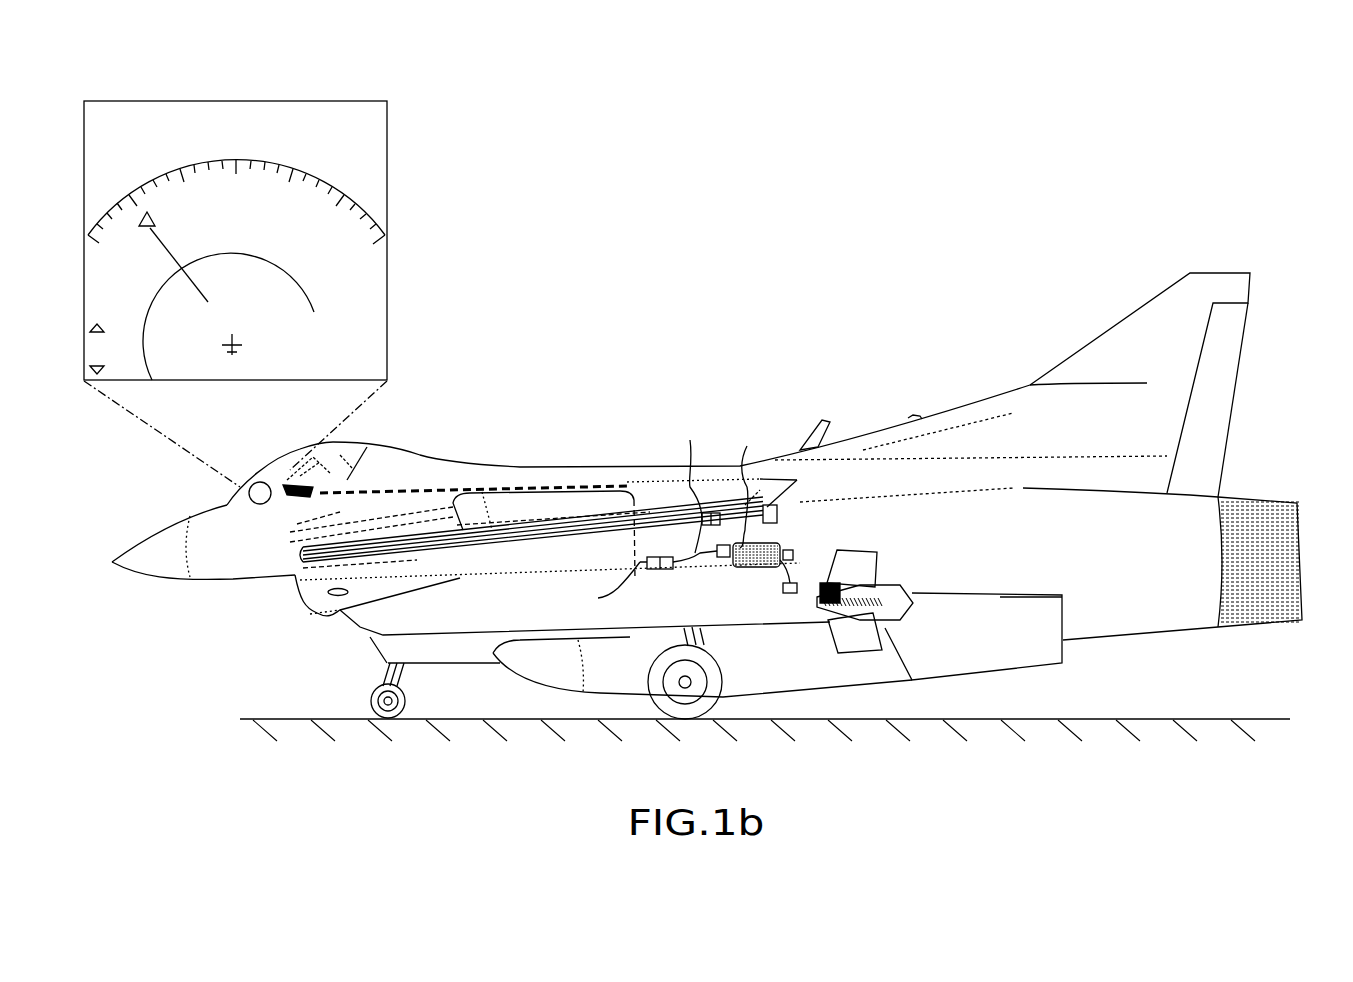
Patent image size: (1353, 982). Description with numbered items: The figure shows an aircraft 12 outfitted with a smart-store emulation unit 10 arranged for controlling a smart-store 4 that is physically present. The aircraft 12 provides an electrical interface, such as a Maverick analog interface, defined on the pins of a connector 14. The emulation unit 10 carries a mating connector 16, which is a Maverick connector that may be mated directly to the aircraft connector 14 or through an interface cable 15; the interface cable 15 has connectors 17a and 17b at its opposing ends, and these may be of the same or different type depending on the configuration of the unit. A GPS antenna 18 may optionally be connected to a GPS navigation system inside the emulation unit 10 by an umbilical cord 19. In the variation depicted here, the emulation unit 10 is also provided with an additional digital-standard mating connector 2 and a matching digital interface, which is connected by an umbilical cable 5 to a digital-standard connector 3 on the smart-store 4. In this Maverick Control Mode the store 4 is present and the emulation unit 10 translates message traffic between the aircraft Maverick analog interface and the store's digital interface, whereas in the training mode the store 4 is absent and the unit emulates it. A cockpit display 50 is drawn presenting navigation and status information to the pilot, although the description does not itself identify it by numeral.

The aircraft 12 is at (420, 445).
The cockpit display 50 is at (235, 294).
The connector 14 is at (614, 584).
The interface cable 15 is at (692, 484).
The connector 17a is at (665, 569).
The connector 17b is at (717, 557).
The GPS antenna 18 is at (737, 513).
The umbilical cord 19 is at (748, 486).
The mating connector 16 is at (783, 508).
The smart-store emulation unit 10 is at (745, 540).
The 1760 mating connector 2 is at (785, 568).
The 1760 connector 3 is at (792, 593).
The umbilical cable 5 is at (833, 556).
The smart-store 4 is at (850, 577).